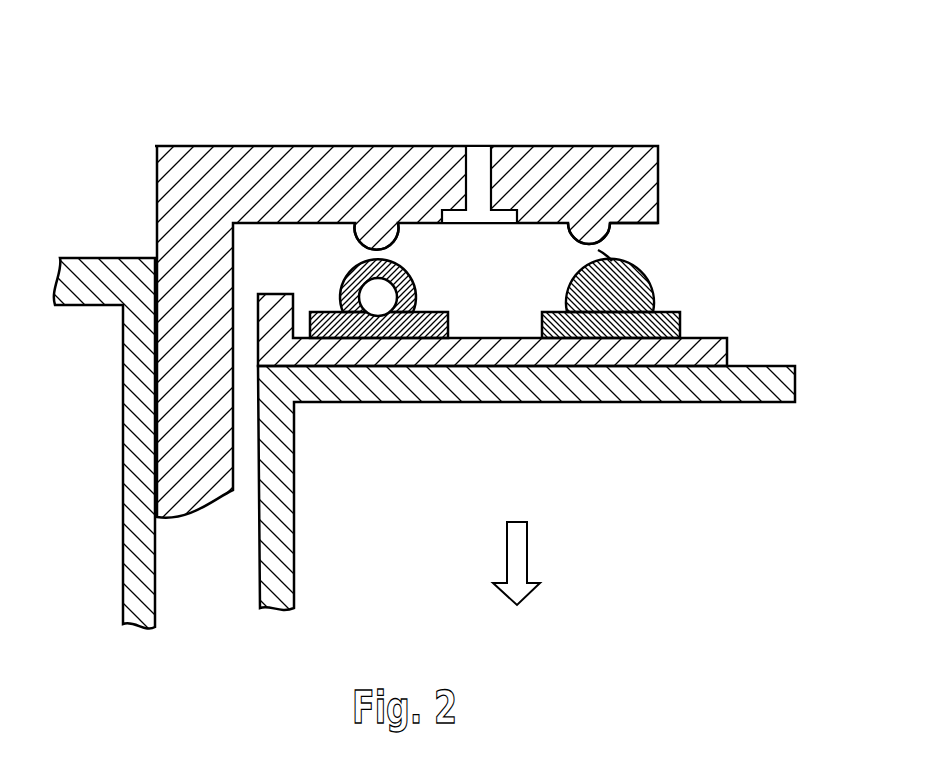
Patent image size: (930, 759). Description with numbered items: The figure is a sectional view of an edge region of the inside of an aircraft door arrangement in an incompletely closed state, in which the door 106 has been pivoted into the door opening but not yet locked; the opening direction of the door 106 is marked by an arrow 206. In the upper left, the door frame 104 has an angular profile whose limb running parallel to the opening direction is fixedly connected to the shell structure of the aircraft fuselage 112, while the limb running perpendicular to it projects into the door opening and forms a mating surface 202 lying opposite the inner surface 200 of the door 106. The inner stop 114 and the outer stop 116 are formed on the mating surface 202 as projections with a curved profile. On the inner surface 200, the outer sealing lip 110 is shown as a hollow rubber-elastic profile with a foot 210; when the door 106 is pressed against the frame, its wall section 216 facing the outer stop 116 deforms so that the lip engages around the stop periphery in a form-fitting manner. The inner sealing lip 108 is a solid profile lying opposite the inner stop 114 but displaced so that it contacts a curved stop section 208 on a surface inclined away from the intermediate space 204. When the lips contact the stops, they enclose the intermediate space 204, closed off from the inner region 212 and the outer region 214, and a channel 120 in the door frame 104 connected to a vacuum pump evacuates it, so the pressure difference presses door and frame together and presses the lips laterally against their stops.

The door frame 104 is at (168, 202).
The door 106 is at (278, 518).
The inner sealing lip 108 is at (617, 305).
The outer sealing lip 110 is at (348, 268).
The aircraft fuselage 112 is at (133, 463).
The inner stop 114 is at (584, 234).
The outer stop 116 is at (378, 242).
The channel 120 is at (478, 163).
The inner surface of the door 200 is at (710, 335).
The mating surface 202 is at (640, 226).
The intermediate space 204 is at (517, 318).
The arrow 206 is at (518, 555).
The curved stop section 208 is at (602, 248).
The foot 210 is at (318, 312).
The inner region 212 is at (320, 45).
The outer region 214 is at (467, 475).
The wall section 216 is at (418, 273).